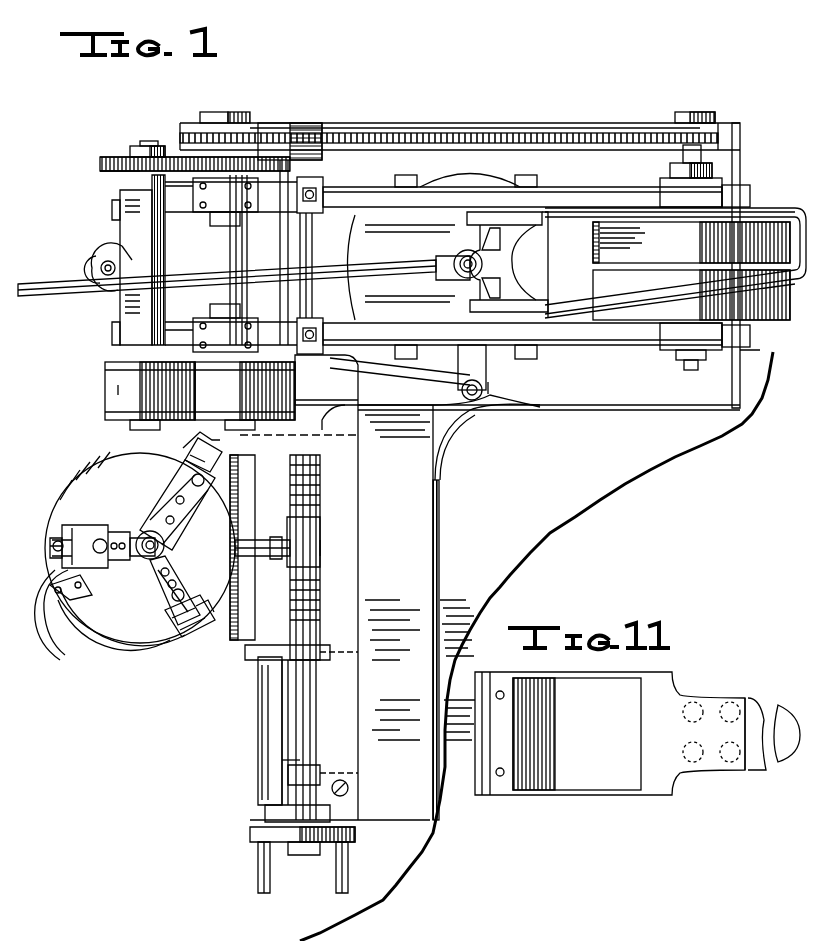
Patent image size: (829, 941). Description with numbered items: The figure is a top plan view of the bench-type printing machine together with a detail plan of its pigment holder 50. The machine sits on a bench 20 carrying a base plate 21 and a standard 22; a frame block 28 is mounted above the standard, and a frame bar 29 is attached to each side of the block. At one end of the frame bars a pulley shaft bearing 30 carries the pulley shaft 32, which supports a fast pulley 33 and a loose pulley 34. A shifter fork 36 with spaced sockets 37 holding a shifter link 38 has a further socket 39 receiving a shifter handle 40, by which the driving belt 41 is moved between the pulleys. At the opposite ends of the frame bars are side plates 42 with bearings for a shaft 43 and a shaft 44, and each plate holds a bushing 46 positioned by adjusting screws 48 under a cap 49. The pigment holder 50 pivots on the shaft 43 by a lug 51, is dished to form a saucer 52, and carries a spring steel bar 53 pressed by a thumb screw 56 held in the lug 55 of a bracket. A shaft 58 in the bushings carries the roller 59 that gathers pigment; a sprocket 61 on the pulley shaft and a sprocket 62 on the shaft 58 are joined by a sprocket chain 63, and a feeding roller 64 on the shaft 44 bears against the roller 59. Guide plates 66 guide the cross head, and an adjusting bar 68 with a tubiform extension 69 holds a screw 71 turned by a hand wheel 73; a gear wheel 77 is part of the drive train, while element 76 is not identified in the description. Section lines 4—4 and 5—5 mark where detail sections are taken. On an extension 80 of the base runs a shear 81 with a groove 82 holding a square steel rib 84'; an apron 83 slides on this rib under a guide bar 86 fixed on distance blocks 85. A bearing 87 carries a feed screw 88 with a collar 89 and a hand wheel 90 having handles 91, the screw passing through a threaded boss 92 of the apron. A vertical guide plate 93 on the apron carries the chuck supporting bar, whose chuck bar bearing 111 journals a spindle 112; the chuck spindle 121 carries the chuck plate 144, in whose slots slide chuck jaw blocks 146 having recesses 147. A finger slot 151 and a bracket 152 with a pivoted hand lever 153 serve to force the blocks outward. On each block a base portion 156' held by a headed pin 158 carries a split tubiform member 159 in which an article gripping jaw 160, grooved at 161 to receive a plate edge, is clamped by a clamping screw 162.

In FIG. 1, the section line 4— 4 is at (50, 547).
In FIG. 1, the section line 5— 5 is at (118, 390).
In FIG. 1, the bench 20 is at (594, 510).
In FIG. 1, the base plate 21 is at (668, 398).
In FIG. 1, the standard 22 is at (468, 184).
In FIG. 1, the frame block 28 is at (402, 267).
In FIG. 1, the frame bar 29 is at (640, 366).
In FIG. 1, the pulley shaft bearing 30 is at (662, 182).
In FIG. 1, the pulley shaft 32 is at (692, 370).
In FIG. 1, the fast pulley 33 is at (691, 295).
In FIG. 1, the loose pulley 34 is at (691, 242).
In FIG. 1, the shifter fork 36 is at (512, 254).
In FIG. 1, the spaced sockets 37 is at (545, 210).
In FIG. 1, the shifter link 38 is at (797, 208).
In FIG. 1, the socket 39 is at (452, 259).
In FIG. 1, the shifter handle 40 is at (28, 286).
In FIG. 1, the belt 41 is at (594, 246).
In FIG. 1, the side plates 42 is at (323, 183).
In FIG. 1, the shaft 43 is at (310, 243).
In FIG. 1, the shaft 44 is at (150, 146).
In FIG. 1, the bushing 46 is at (215, 226).
In FIG. 1, the adjusting screws 48 is at (305, 186).
In FIG. 1, the cap 49 is at (225, 265).
In FIG. 1, the pigment holder 50 is at (326, 392).
In FIG. 11, the pigment holder 50 is at (620, 744).
In FIG. 1, the downwardly extending lug 51 is at (335, 364).
In FIG. 1, the saucer-like depression 52 is at (280, 436).
In FIG. 11, the saucer-like depression 52 is at (573, 780).
In FIG. 1, the spring steel bar 53 is at (435, 398).
In FIG. 11, the spring steel bar 53 is at (792, 766).
In FIG. 1, the projecting lug 55 is at (462, 372).
In FIG. 1, the thumb screw 56 is at (500, 402).
In FIG. 1, the shaft 58 is at (235, 250).
In FIG. 1, the roller 59 is at (245, 396).
In FIG. 1, the sprocket 61 is at (716, 133).
In FIG. 1, the sprocket 62 is at (203, 133).
In FIG. 1, the sprocket chain 63 is at (488, 133).
In FIG. 1, the feeding roller 64 is at (104, 406).
In FIG. 1, the guide plates 66 is at (113, 208).
In FIG. 1, the adjusting bar 68 is at (140, 248).
In FIG. 1, the tubiform extension 69 is at (96, 258).
In FIG. 1, the screw 71 is at (104, 276).
In FIG. 1, the hand wheel 73 is at (92, 265).
In FIG. 1, the bar 76 is at (218, 178).
In FIG. 1, the gear wheel 77 is at (142, 182).
In FIG. 1, the extension 80 is at (392, 670).
In FIG. 1, the shear 81 is at (268, 750).
In FIG. 1, the longitudinal groove 82 is at (280, 694).
In FIG. 1, the apron 83 is at (252, 660).
In FIG. 1, the square cold roll steel 84' is at (246, 779).
In FIG. 1, the distance block 85 is at (348, 776).
In FIG. 1, the guide bar 86 is at (352, 680).
In FIG. 1, the bearing 87 is at (292, 798).
In FIG. 1, the feed screw 88 is at (298, 708).
In FIG. 1, the collar 89 is at (318, 766).
In FIG. 1, the hand wheel 90 is at (258, 840).
In FIG. 1, the handles 91 is at (260, 880).
In FIG. 1, the threaded boss 92 is at (312, 528).
In FIG. 1, the vertical guide plate 93 is at (250, 607).
In FIG. 1, the chuck bar bearing 111 is at (262, 542).
In FIG. 1, the spindle 112 is at (276, 558).
In FIG. 1, the chuck spindle 121 is at (148, 532).
In FIG. 1, the chuck plate 144 is at (160, 628).
In FIG. 1, the chuck jaw block 146 is at (178, 558).
In FIG. 1, the recesses 147 is at (175, 522).
In FIG. 1, the finger slot 151 is at (118, 610).
In FIG. 1, the bracket 152 is at (82, 590).
In FIG. 1, the hand lever 153 is at (62, 656).
In FIG. 1, the base portion 156' is at (190, 627).
In FIG. 1, the headed pin 158 is at (170, 593).
In FIG. 1, the split tubiform member 159 is at (90, 540).
In FIG. 1, the article gripping jaw 160 is at (60, 528).
In FIG. 1, the groove 161 is at (208, 628).
In FIG. 1, the clamping screw 162 is at (184, 462).